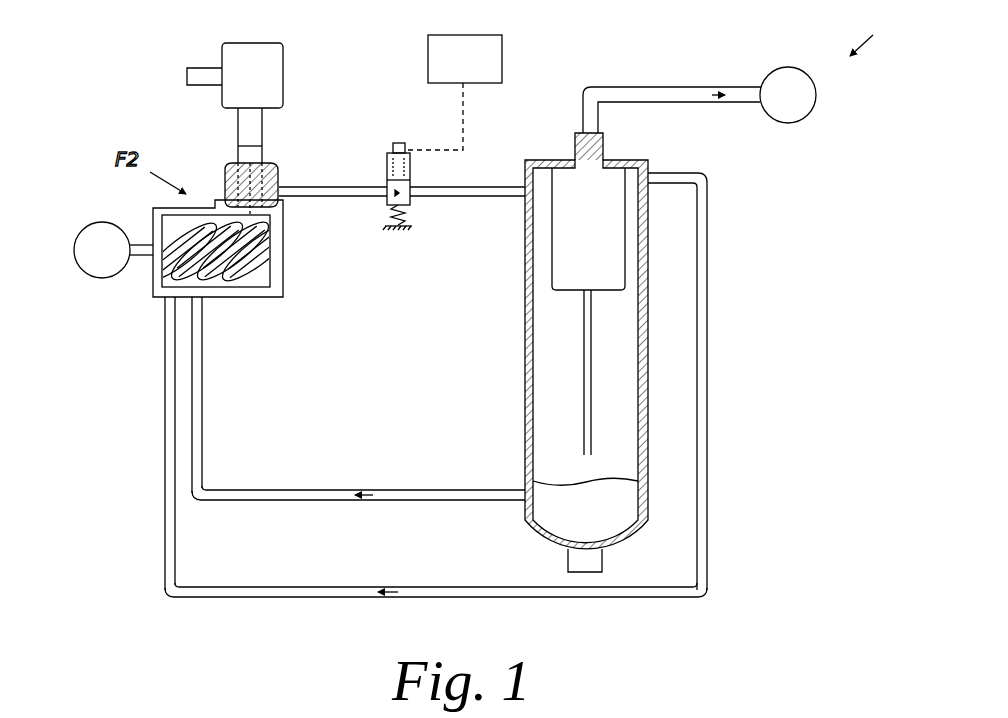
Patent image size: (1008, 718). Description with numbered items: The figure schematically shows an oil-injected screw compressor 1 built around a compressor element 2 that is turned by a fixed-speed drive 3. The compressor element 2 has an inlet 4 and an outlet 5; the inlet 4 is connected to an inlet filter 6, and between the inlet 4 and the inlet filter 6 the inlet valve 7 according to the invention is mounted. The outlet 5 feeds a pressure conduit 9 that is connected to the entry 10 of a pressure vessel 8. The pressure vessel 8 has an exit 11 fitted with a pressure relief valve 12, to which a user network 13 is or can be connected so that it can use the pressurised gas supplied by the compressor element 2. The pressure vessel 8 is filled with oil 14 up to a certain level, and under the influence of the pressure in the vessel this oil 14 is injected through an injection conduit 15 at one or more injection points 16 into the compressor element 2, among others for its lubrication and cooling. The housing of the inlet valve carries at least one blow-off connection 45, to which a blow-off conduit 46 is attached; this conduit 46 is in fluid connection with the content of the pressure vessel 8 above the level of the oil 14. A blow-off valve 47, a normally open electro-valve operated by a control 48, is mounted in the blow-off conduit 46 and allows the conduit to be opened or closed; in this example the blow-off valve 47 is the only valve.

The compressor 1 is at (864, 33).
The compressor element 2 is at (276, 290).
The fixed-speed drive 3 is at (90, 277).
The inlet 4 is at (262, 233).
The outlet 5 is at (170, 300).
The inlet filter 6 is at (265, 80).
The inlet valve 7 is at (222, 185).
The pressure vessel 8 is at (637, 527).
The pressure conduit 9 is at (290, 591).
The entry 10 is at (650, 180).
The exit 11 is at (601, 153).
The pressure relief valve 12 is at (576, 145).
The user network 13 is at (777, 90).
The oil 14 is at (575, 520).
The injection conduit 15 is at (423, 497).
The injection points 16 is at (205, 298).
The blow-off connection 45 is at (280, 190).
The blow-off conduit 46 is at (497, 197).
The blow-off valve 47 is at (410, 205).
The control 48 is at (470, 68).